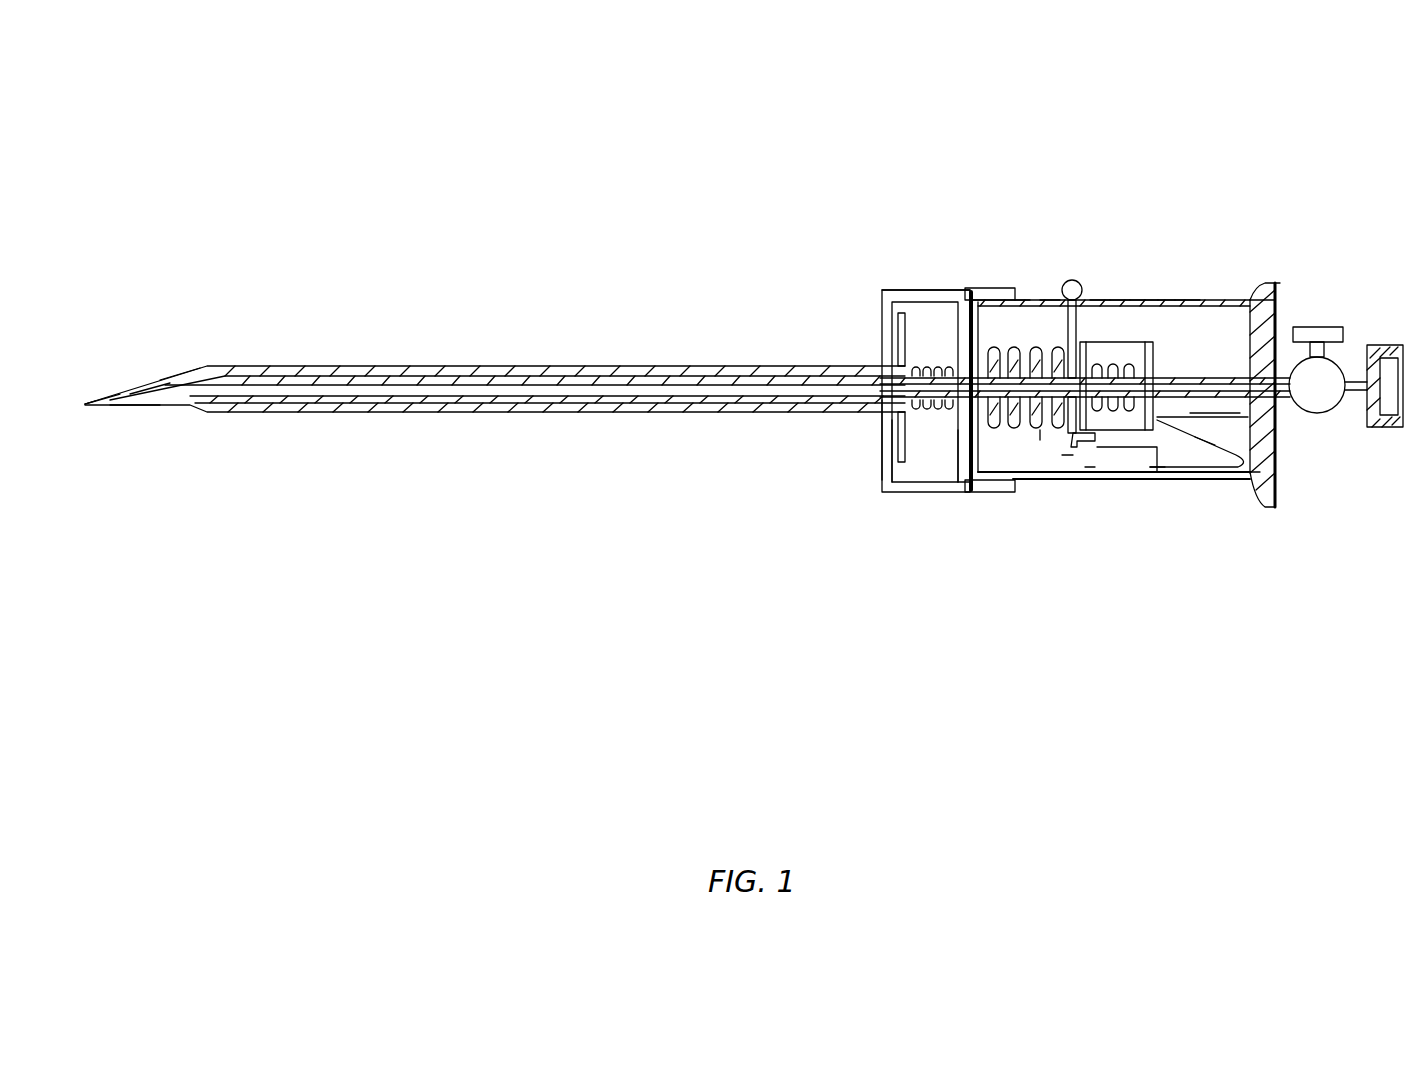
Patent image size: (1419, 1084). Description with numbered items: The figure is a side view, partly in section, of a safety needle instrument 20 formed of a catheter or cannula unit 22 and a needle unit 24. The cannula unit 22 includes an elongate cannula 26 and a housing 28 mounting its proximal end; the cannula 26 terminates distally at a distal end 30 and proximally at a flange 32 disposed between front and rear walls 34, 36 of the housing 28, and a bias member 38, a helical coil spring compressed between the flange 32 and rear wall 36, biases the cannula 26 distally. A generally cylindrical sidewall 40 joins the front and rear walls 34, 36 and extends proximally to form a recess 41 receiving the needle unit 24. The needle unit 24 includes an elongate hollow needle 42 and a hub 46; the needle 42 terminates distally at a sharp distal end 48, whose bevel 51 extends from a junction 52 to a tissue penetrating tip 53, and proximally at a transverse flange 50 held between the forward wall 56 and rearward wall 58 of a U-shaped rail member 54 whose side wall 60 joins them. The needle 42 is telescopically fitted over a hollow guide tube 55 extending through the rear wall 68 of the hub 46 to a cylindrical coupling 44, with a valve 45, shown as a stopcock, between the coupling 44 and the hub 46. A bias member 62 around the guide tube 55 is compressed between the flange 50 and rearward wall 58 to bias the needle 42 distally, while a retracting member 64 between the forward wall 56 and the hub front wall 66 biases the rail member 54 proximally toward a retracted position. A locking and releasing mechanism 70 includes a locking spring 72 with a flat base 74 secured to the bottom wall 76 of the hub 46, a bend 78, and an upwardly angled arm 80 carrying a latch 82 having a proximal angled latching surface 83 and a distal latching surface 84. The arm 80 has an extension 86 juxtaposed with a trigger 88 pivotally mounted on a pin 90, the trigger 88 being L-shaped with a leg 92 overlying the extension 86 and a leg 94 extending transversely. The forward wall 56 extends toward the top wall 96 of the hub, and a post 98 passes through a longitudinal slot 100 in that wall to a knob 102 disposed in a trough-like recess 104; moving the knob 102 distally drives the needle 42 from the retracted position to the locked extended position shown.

The safety needle instrument 20 is at (766, 199).
The catheter or cannula unit 22 is at (918, 278).
The needle unit 24 is at (1182, 212).
The cannula 26 is at (328, 362).
The housing 28 is at (878, 306).
The distal end 30 is at (193, 372).
The flange 32 is at (920, 312).
The front wall 34 is at (882, 458).
The rear wall 36 is at (940, 482).
The bias member 38 is at (935, 447).
The sidewall 40 is at (990, 495).
The recess 41 is at (1023, 298).
The needle 42 is at (438, 363).
The coupling 44 is at (1385, 344).
The valve 45 is at (1318, 326).
The hub 46 is at (1280, 282).
The distal end 48 is at (136, 412).
The flange 50 is at (1118, 298).
The bevel 51 is at (128, 392).
The junction 52 is at (170, 383).
The tissue penetrating tip 53 is at (85, 408).
The rail member 54 is at (1148, 337).
The guide tube 55 is at (1248, 235).
The forward wall 56 is at (1048, 298).
The rearward wall 58 is at (1155, 362).
The side wall 60 is at (1135, 298).
The bias member 62 is at (1150, 298).
The retracting member 64 is at (1040, 298).
The front wall 66 is at (988, 292).
The rear wall 68 is at (1248, 460).
The locking and releasing mechanism 70 is at (1143, 480).
The locking spring 72 is at (1153, 463).
The base 74 is at (1080, 485).
The bottom wall 76 is at (1255, 482).
The bend 78 is at (1230, 478).
The arm 80 is at (1200, 445).
The latch 82 is at (1293, 410).
The proximal angled latching surface 83 is at (1195, 408).
The distal latching surface 84 is at (1097, 478).
The extension 86 is at (1065, 458).
The trigger 88 is at (1046, 437).
The pin 90 is at (1085, 470).
The leg 92 is at (962, 487).
The leg 94 is at (1075, 443).
The top wall 96 is at (1258, 292).
The post 98 is at (1103, 298).
The slot 100 is at (1165, 298).
The knob 102 is at (1072, 280).
The recess 104 is at (1187, 298).